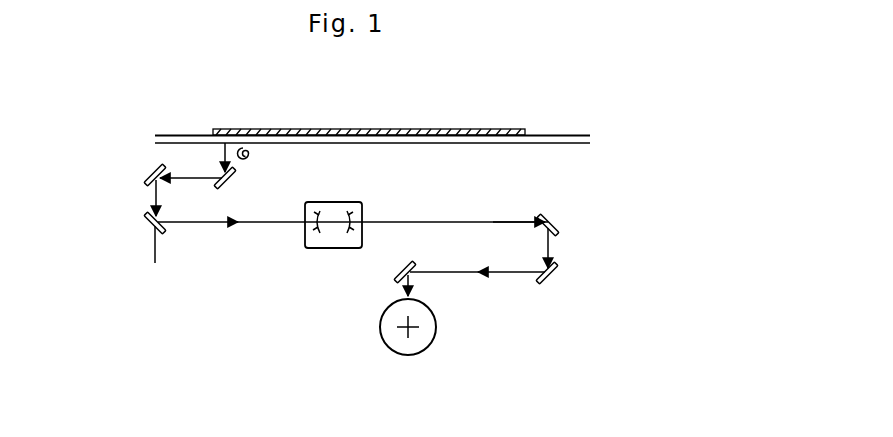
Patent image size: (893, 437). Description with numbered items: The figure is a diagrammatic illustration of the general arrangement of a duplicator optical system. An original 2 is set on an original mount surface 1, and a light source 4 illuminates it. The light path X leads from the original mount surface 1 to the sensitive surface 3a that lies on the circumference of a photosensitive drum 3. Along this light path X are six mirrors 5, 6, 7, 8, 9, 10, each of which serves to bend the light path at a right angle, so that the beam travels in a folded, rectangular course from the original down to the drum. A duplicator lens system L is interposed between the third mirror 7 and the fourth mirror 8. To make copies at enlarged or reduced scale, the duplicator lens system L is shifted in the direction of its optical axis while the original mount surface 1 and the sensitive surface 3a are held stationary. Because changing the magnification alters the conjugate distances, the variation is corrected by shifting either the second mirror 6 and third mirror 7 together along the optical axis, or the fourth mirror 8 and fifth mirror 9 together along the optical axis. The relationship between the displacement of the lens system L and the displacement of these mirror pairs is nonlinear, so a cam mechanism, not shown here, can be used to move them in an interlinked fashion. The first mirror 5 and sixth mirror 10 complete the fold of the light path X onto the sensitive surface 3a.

The original mount surface 1 is at (563, 136).
The original 2 is at (518, 130).
The photosensitive drum 3 is at (433, 332).
The sensitive surface 3a is at (432, 343).
The light source 4 is at (250, 156).
The first mirror 5 is at (232, 178).
The second mirror 6 is at (149, 170).
The third mirror 7 is at (155, 251).
The fourth mirror 8 is at (545, 217).
The fifth mirror 9 is at (553, 278).
The sixth mirror 10 is at (400, 265).
The duplicator lens system L is at (333, 208).
The light path X is at (405, 221).